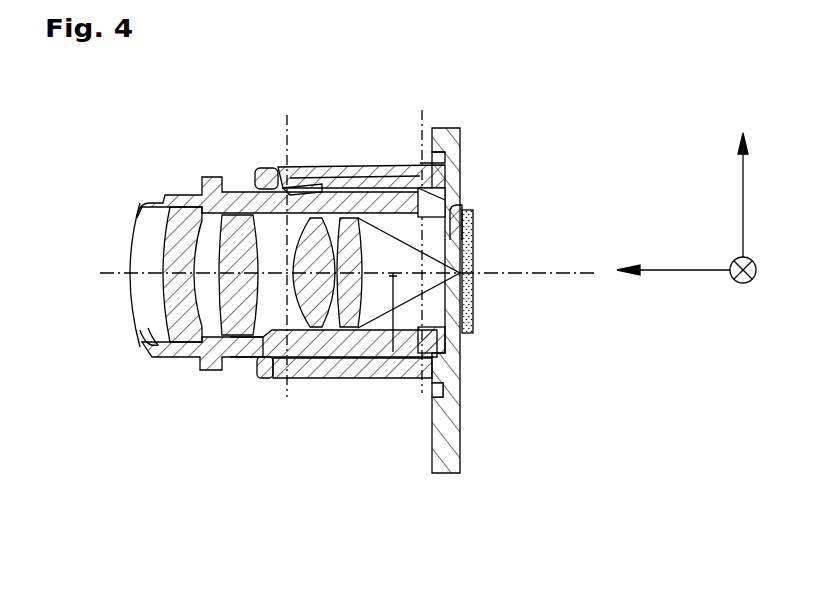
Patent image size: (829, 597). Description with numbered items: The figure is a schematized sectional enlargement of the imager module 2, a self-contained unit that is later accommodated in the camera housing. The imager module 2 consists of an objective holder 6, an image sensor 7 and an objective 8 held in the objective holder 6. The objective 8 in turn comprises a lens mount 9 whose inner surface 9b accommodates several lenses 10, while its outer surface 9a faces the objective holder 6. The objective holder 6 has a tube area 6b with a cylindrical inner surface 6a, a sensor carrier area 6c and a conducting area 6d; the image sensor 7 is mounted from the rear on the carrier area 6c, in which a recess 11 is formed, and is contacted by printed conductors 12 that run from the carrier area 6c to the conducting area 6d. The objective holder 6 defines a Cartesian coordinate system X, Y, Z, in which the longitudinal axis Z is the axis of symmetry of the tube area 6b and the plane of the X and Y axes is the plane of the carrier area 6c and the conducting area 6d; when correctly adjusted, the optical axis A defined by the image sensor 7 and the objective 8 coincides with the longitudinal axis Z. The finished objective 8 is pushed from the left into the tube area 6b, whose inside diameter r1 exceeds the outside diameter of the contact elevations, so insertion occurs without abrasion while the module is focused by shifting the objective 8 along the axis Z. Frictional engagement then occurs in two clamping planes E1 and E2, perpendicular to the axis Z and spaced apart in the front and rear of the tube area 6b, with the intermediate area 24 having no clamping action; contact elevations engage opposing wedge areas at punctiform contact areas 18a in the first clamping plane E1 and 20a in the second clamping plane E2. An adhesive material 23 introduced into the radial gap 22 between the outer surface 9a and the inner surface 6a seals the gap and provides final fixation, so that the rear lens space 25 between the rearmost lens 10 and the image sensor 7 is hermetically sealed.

The imager module 2 is at (128, 126).
The objective holder 6 is at (443, 473).
The cylindrical inner surface 6a is at (330, 185).
The tube area 6b is at (395, 180).
The sensor carrier area 6c is at (455, 350).
The conducting area 6d is at (458, 395).
The image sensor 7 is at (473, 240).
The objective 8 is at (177, 365).
The lens mount 9 is at (207, 369).
The outer surface 9a is at (237, 357).
The inner surface 9b is at (140, 332).
The lenses 10 is at (163, 230).
The recess 11 is at (445, 203).
The printed conductors 12 is at (462, 447).
The punctiform contact area 18a is at (280, 183).
The punctiform contact area 20a is at (450, 168).
The radial gap 22 is at (343, 377).
The adhesive material 23 is at (267, 363).
The area between clamping planes 24 is at (370, 187).
The rear lens space 25 is at (430, 308).
The inside diameter of tube area r1 is at (373, 378).
The first clamping plane E1 is at (290, 115).
The second clamping plane E2 is at (423, 110).
The optical axis A is at (580, 268).
The X axis X is at (743, 188).
The Y axis Y is at (745, 283).
The longitudinal axis Z is at (680, 272).